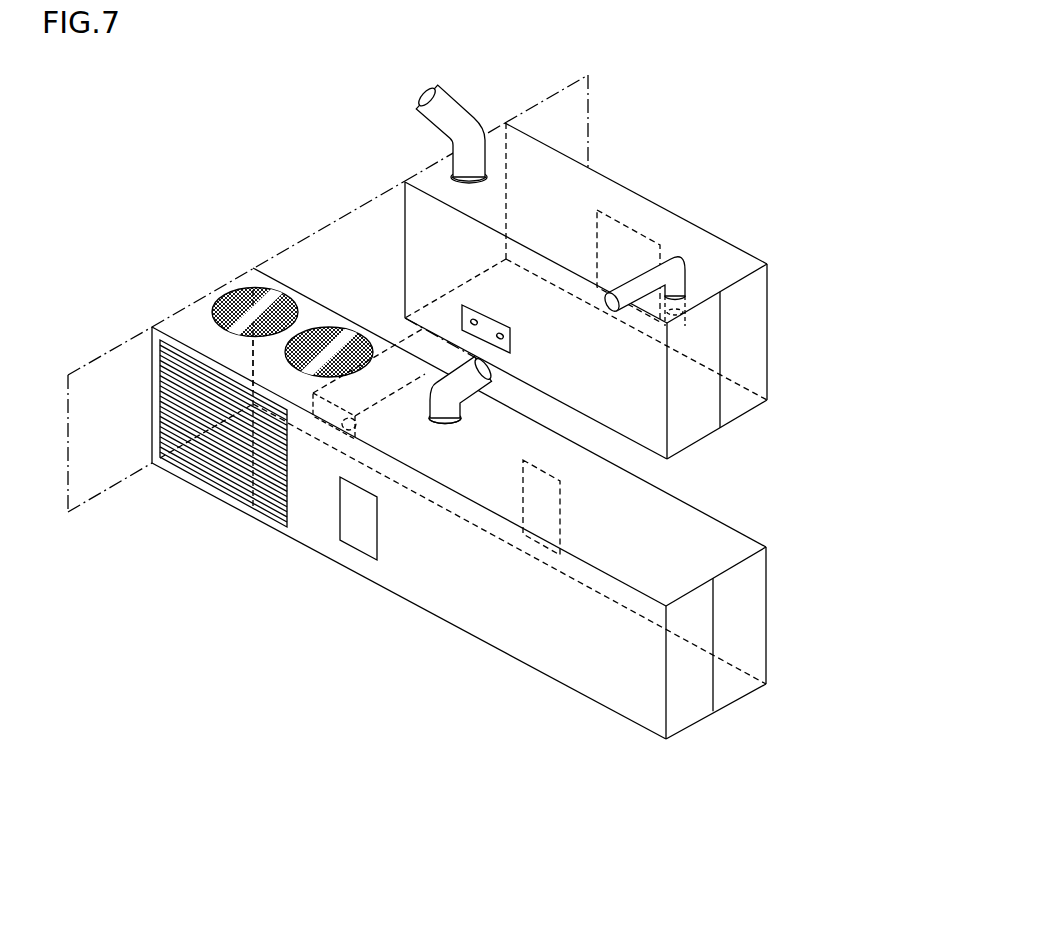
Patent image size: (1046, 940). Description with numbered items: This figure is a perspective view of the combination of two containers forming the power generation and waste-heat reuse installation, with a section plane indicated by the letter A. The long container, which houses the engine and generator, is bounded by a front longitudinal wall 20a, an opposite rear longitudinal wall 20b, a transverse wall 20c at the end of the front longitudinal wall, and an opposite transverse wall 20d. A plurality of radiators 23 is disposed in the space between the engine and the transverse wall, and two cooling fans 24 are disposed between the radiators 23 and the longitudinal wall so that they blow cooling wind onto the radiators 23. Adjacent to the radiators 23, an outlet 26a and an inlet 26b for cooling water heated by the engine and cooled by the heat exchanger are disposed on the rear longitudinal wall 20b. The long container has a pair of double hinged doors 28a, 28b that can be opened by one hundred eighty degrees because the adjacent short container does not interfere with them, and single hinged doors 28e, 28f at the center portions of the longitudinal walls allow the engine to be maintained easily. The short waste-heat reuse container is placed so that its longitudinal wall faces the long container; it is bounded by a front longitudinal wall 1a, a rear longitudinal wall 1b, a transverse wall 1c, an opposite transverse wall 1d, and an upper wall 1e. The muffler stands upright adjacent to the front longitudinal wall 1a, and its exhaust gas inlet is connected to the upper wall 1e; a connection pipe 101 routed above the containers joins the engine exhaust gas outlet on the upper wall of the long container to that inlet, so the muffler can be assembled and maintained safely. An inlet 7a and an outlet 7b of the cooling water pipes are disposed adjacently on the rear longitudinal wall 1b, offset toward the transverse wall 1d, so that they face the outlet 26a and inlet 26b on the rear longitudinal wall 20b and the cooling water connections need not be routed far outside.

The front longitudinal wall 1a is at (645, 190).
The rear longitudinal wall 1b is at (424, 230).
The 20-f transverse wall 1c is at (749, 332).
The 0-f transverse wall 1d is at (492, 126).
The upper wall 1e is at (590, 194).
The connection pipe 101 is at (634, 267).
The inlet 7a is at (505, 328).
The outlet 7b is at (475, 320).
The front longitudinal wall 20a is at (448, 602).
The rear longitudinal wall 20b is at (719, 521).
The 40-f transverse wall 20c is at (758, 641).
The 40-f transverse wall 20d is at (190, 299).
The radiators 23 is at (252, 511).
The cooling fans 24 is at (280, 297).
The outlet 26a is at (371, 433).
The inlet 26b is at (324, 438).
The double hinged door 28a is at (737, 682).
The double hinged door 28b is at (684, 712).
The single hinged door 28e is at (358, 547).
The single hinged door 28f is at (548, 506).
The section plane A is at (92, 380).